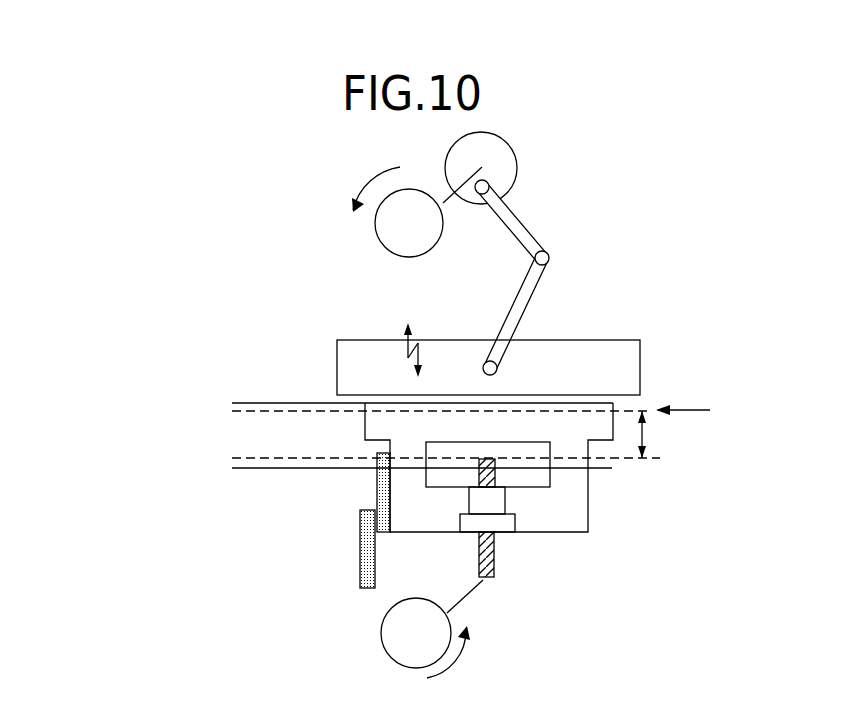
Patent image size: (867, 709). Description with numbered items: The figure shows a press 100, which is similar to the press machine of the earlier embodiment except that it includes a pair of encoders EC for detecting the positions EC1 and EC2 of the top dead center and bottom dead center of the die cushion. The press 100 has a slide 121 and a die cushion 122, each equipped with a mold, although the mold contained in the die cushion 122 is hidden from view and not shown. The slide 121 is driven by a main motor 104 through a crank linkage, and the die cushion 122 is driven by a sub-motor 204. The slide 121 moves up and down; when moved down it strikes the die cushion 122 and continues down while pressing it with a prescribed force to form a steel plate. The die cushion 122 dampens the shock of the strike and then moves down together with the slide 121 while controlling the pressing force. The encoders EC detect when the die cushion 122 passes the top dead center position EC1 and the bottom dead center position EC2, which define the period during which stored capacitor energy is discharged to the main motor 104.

The press 100 is at (630, 243).
The main motor 104 is at (375, 228).
The slide 121 is at (612, 340).
The die cushion 122 is at (588, 515).
The sub-motor 204 is at (382, 643).
The encoders EC is at (392, 593).
The top dead center position EC1 is at (336, 496).
The bottom dead center position EC2 is at (329, 549).